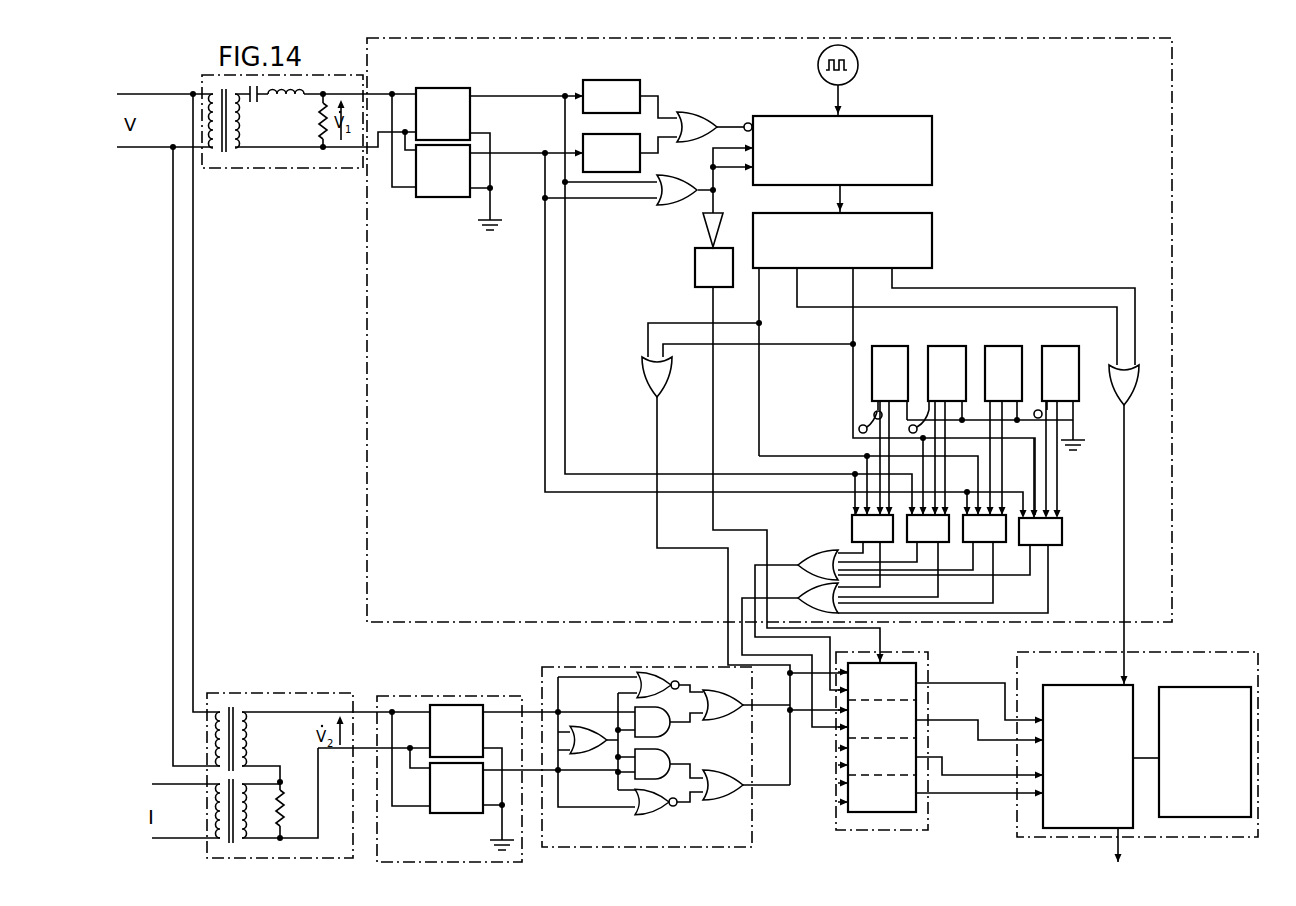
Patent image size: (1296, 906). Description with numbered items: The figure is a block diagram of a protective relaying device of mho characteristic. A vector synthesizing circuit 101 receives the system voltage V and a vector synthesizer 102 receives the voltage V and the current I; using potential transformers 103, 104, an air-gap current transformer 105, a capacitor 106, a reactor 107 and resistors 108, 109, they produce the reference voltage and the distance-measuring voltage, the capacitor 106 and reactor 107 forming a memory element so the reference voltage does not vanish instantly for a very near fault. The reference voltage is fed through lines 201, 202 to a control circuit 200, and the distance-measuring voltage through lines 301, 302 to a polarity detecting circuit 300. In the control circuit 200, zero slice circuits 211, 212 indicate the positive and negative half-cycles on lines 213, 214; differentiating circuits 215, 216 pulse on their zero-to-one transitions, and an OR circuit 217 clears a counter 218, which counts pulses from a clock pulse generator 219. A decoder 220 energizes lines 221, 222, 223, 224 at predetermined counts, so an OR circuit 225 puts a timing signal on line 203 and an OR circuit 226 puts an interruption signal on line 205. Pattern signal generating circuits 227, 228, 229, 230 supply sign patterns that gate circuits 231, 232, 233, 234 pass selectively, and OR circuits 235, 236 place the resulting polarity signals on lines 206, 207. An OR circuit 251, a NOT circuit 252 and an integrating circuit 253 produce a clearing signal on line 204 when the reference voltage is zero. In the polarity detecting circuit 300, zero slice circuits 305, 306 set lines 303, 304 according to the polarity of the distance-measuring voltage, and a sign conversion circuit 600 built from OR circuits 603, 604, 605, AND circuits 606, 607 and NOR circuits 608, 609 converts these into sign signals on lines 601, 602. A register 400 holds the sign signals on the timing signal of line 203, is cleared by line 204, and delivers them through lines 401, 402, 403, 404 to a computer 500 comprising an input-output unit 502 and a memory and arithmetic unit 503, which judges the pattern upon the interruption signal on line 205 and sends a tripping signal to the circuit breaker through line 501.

The vector synthesizing circuit 101 is at (312, 78).
The vector synthesizer 102 is at (238, 694).
The potential transformer 103 is at (252, 151).
The potential transformer 104 is at (248, 734).
The current transformer with air-gap 105 is at (232, 845).
The capacitor 106 is at (254, 102).
The reactor 107 is at (290, 98).
The resistor 108 is at (320, 140).
The resistor 109 is at (286, 797).
The control circuit 200 is at (1008, 42).
The line 201 is at (386, 93).
The line 202 is at (354, 160).
The line 203 is at (728, 650).
The line 204 is at (881, 637).
The line 205 is at (1126, 630).
The line 206 is at (753, 585).
The line 207 is at (741, 614).
The zero slice circuit 211 is at (431, 90).
The zero slice circuit 212 is at (440, 198).
The line 213 is at (506, 97).
The line 214 is at (506, 154).
The differentiating circuit 215 is at (595, 82).
The differentiating circuit 216 is at (594, 138).
The OR circuit 217 is at (684, 112).
The counter 218 is at (932, 158).
The clock pulse generator 219 is at (858, 65).
The decoder 220 is at (932, 240).
The line 221 is at (761, 283).
The line 222 is at (799, 283).
The line 223 is at (855, 283).
The line 224 is at (893, 284).
The OR circuit 225 is at (643, 376).
The OR circuit 226 is at (1130, 404).
The pattern signal generating circuit 227 is at (883, 347).
The pattern signal generating circuit 228 is at (938, 347).
The pattern signal generating circuit 229 is at (993, 347).
The pattern signal generating circuit 230 is at (1050, 347).
The gate circuit 231 is at (851, 528).
The gate circuit 232 is at (909, 541).
The gate circuit 233 is at (965, 541).
The gate circuit 234 is at (1062, 531).
The OR circuit 235 is at (814, 556).
The OR circuit 236 is at (814, 591).
The OR circuit 251 is at (680, 206).
The NOT circuit 252 is at (692, 236).
The integrating circuit 253 is at (694, 270).
The polarity detecting circuit 300 is at (470, 696).
The line 301 is at (366, 710).
The line 302 is at (356, 749).
The line 303 is at (525, 700).
The line 304 is at (530, 775).
The zero slice circuit 305 is at (460, 705).
The zero slice circuit 306 is at (453, 814).
The register 400 is at (893, 833).
The line 401 is at (949, 683).
The line 402 is at (954, 720).
The line 403 is at (958, 776).
The line 404 is at (986, 795).
The computer 500 is at (1197, 652).
The line 501 is at (1122, 848).
The input-output unit 502 is at (1133, 686).
The memory and arithmetic unit 503 is at (1202, 687).
The sign conversion circuit 600 is at (752, 826).
The line 601 is at (786, 668).
The line 602 is at (792, 800).
The OR circuit 603 is at (590, 756).
The OR circuit 604 is at (727, 720).
The OR circuit 605 is at (720, 800).
The AND circuit 606 is at (667, 734).
The AND circuit 607 is at (670, 758).
The NOR circuit 608 is at (662, 673).
The NOR circuit 609 is at (663, 816).